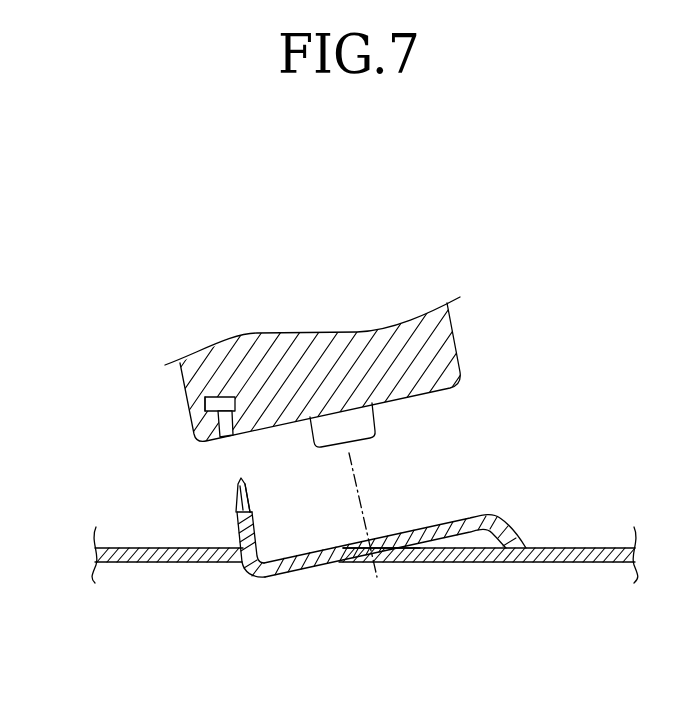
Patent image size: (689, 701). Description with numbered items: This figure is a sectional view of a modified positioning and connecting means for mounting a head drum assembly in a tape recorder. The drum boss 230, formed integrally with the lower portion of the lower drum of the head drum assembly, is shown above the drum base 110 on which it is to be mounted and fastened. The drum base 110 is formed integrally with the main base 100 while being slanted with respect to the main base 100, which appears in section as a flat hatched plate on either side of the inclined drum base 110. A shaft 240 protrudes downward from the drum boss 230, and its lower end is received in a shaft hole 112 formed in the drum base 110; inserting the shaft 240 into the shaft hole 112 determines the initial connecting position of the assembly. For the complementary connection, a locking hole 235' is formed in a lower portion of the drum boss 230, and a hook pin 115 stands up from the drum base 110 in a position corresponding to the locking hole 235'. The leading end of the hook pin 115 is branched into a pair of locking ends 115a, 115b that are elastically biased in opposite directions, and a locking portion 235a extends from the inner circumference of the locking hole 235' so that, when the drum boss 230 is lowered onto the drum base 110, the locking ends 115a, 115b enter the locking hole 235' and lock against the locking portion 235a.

The drum boss 230 is at (441, 352).
The locking hole 235' is at (197, 364).
The locking portion 235a is at (204, 401).
The shaft 240 is at (367, 425).
The main base 100 is at (152, 563).
The drum base 110 is at (494, 517).
The shaft hole 112 is at (358, 563).
The hook pin 115 is at (230, 512).
The locking end 115a is at (236, 485).
The locking end 115b is at (247, 493).